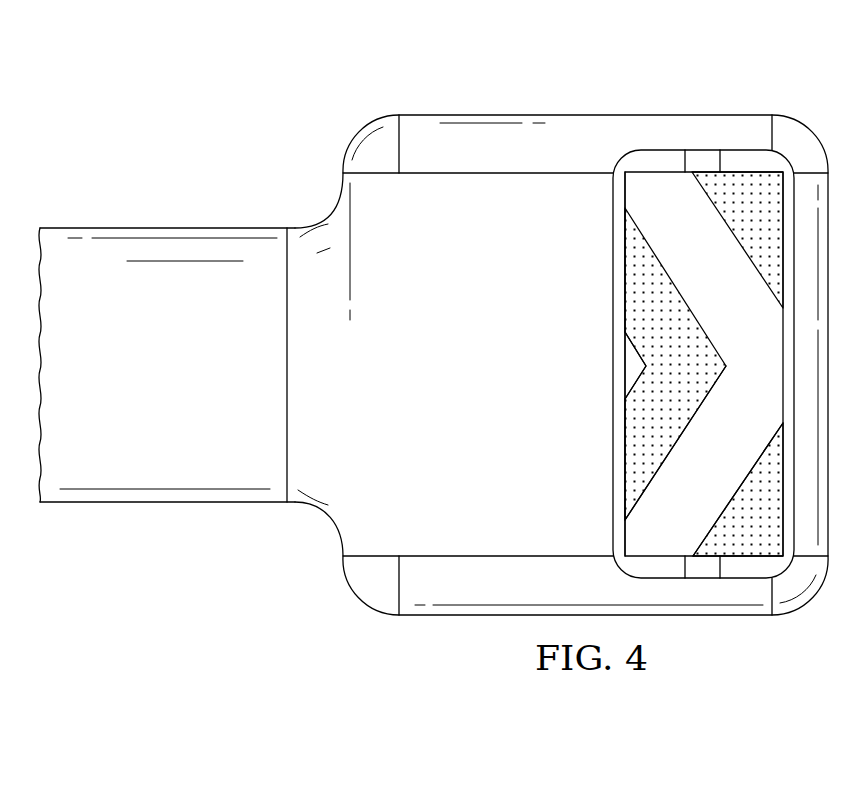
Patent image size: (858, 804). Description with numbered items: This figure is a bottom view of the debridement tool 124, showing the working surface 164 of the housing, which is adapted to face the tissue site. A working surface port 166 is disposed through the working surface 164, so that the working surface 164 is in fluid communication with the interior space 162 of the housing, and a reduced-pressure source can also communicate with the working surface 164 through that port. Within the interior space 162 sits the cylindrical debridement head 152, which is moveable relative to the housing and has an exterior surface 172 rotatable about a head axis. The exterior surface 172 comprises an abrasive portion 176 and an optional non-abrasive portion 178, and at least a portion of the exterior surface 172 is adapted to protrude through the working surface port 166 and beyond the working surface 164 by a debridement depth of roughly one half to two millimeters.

The debridement tool 124 is at (280, 157).
The working surface 164 is at (434, 155).
The debridement head 152 is at (760, 160).
The interior space 162 is at (658, 163).
The exterior surface 172 is at (654, 293).
The working surface port 166 is at (622, 298).
The non-abrasive portion 178 is at (633, 365).
The abrasive portion 176 is at (740, 488).